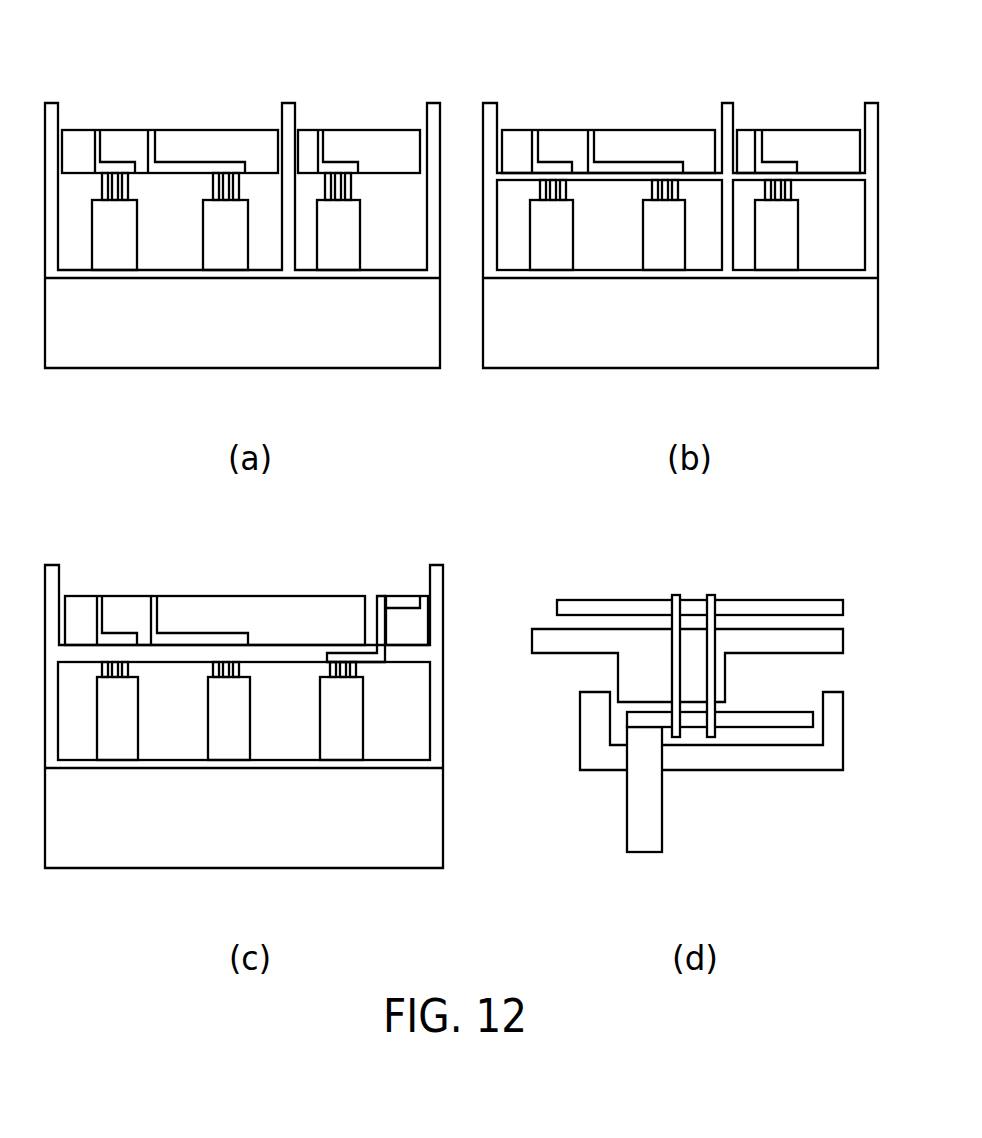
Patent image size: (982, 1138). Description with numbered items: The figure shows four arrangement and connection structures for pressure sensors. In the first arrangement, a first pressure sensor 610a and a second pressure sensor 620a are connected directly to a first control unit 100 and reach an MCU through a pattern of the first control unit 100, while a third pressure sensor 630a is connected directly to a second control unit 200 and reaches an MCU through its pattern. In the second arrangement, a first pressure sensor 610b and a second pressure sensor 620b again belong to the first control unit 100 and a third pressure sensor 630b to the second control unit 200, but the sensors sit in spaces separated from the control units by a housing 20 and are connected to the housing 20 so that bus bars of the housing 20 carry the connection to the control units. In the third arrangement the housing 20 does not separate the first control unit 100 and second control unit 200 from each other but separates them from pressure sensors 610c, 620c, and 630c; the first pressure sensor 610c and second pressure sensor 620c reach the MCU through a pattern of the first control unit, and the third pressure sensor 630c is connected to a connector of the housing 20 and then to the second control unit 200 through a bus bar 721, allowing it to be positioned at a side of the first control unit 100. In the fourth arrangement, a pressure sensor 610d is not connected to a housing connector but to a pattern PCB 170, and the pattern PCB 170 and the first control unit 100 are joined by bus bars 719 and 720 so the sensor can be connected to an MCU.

The housing 20 is at (290, 102).
The first control unit 100 is at (180, 137).
The second control unit 200 is at (368, 137).
The pattern PCB 170 is at (766, 722).
The bus bar 719 is at (674, 595).
The bus bar 720 is at (713, 595).
The bus bar 721 is at (372, 643).
The first pressure sensor 610a is at (113, 258).
The second pressure sensor 620a is at (225, 258).
The third pressure sensor 630a is at (338, 258).
The first pressure sensor 610b is at (551, 258).
The second pressure sensor 620b is at (664, 258).
The third pressure sensor 630b is at (776, 258).
The first pressure sensor 610c is at (117, 745).
The second pressure sensor 620c is at (229, 745).
The third pressure sensor 630c is at (341, 745).
The pressure sensor 610d is at (635, 805).